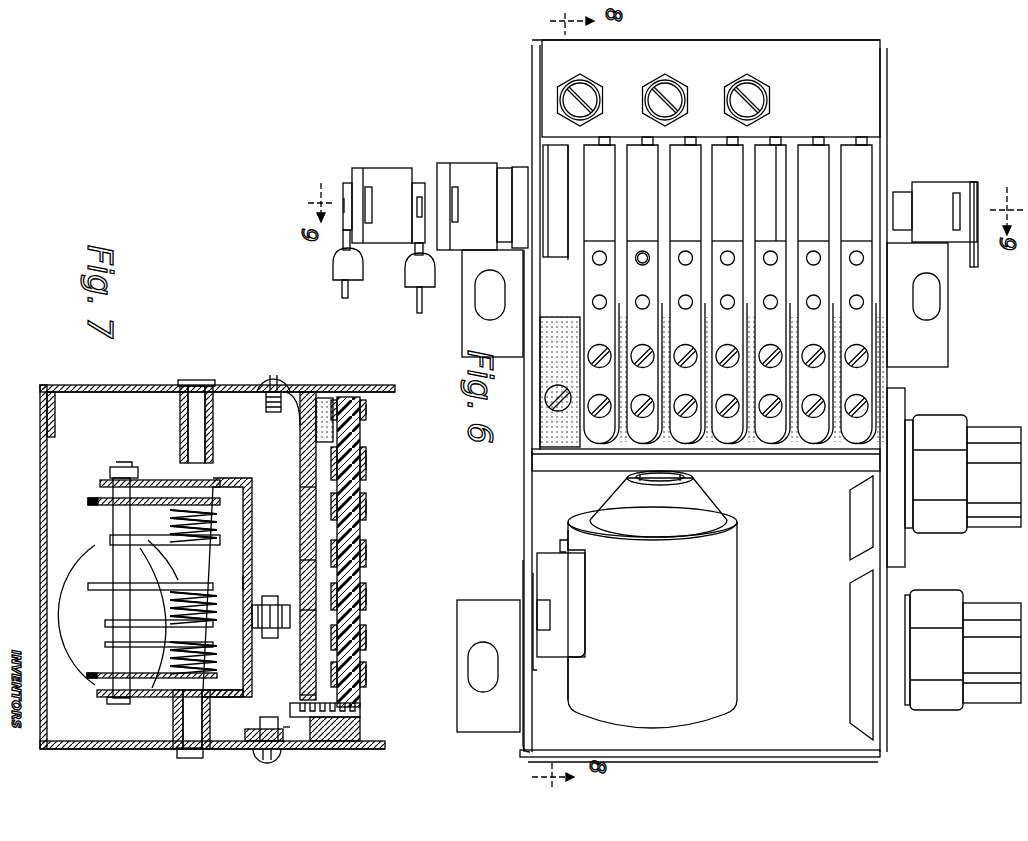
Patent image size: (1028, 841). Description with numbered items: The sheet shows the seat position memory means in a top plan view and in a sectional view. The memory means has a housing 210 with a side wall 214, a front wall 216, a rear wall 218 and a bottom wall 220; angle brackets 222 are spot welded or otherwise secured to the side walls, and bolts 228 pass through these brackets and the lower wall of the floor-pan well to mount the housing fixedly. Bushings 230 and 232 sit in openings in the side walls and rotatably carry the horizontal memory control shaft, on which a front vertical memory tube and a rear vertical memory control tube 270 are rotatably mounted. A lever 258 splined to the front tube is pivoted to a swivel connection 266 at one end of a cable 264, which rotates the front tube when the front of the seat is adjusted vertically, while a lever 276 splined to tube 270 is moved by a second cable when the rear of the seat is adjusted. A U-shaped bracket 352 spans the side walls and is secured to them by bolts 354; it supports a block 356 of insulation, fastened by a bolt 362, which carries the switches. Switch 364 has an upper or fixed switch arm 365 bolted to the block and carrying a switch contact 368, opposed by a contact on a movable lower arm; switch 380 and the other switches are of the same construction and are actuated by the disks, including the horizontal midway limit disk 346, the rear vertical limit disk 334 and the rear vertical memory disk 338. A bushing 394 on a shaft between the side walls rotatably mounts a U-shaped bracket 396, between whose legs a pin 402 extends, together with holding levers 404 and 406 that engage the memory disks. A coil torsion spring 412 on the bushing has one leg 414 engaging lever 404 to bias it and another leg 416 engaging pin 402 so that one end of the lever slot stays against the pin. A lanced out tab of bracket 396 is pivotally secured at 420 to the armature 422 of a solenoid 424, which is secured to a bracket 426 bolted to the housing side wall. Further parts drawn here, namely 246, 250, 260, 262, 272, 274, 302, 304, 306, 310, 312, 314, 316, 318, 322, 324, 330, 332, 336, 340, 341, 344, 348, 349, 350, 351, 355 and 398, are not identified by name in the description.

In FIG. 6, the housing 210 is at (760, 748).
In FIG. 7, the housing 210 is at (66, 400).
In FIG. 6, the side wall 214 is at (885, 125).
In FIG. 6, the front wall 216 is at (822, 758).
In FIG. 6, the rear wall 218 is at (535, 540).
In FIG. 7, the bottom wall 220 is at (44, 455).
In FIG. 6, the angle brackets 222 is at (472, 325).
In FIG. 6, the bolts 228 is at (905, 200).
In FIG. 6, the bushing 230 is at (890, 300).
In FIG. 6, the bushing 232 is at (517, 170).
In FIG. 6, the side flange 246 is at (965, 265).
In FIG. 6, the plug flange 250 is at (415, 185).
In FIG. 6, the lever 258 is at (365, 170).
In FIG. 6, the plug pin 260 is at (420, 180).
In FIG. 6, the plug cap 262 is at (424, 295).
In FIG. 6, the cable 264 is at (350, 282).
In FIG. 6, the swivel connection 266 is at (345, 185).
In FIG. 6, the rear vertical memory control tube 270 is at (450, 165).
In FIG. 6, the connector spacer 272 is at (502, 170).
In FIG. 6, the right connector body 274 is at (960, 190).
In FIG. 6, the lever 276 is at (978, 205).
In FIG. 7, the bottom block 302 is at (362, 730).
In FIG. 7, the contact column 304 is at (372, 490).
In FIG. 7, the column block 306 is at (368, 680).
In FIG. 7, the insulator 310 is at (305, 580).
In FIG. 7, the base plate 312 is at (380, 750).
In FIG. 7, the insulating pad 314 is at (340, 395).
In FIG. 7, the column block 316 is at (368, 565).
In FIG. 7, the column block 318 is at (368, 595).
In FIG. 7, the column block 322 is at (368, 450).
In FIG. 7, the column block 324 is at (368, 640).
In FIG. 7, the column block 330 is at (368, 420).
In FIG. 6, the bus plate 332 is at (540, 460).
In FIG. 6, the rear vertical limit disk 334 is at (636, 253).
In FIG. 7, the rear vertical limit disk 334 is at (252, 580).
In FIG. 6, the bus plate edge 336 is at (560, 455).
In FIG. 7, the bus plate edge 336 is at (300, 695).
In FIG. 6, the rear vertical memory disk 338 is at (572, 290).
In FIG. 7, the bracket 340 is at (283, 725).
In FIG. 6, the cover screw 341 is at (577, 88).
In FIG. 6, the frame 344 is at (556, 278).
In FIG. 6, the horizontal midway limit disk 346 is at (685, 160).
In FIG. 7, the horizontal midway limit disk 346 is at (250, 650).
In FIG. 6, the terminal strip 348 is at (640, 160).
In FIG. 6, the cover screw 349 is at (752, 80).
In FIG. 6, the terminal strip 350 is at (600, 160).
In FIG. 7, the terminal strip 350 is at (246, 698).
In FIG. 6, the cover screw 351 is at (690, 92).
In FIG. 7, the U-shaped bracket 352 is at (310, 395).
In FIG. 7, the bolts 354 is at (268, 380).
In FIG. 7, the column block 355 is at (368, 525).
In FIG. 6, the block of insulation 356 is at (725, 160).
In FIG. 7, the block of insulation 356 is at (352, 787).
In FIG. 6, the bolt 362 is at (562, 385).
In FIG. 7, the bolt 362 is at (197, 383).
In FIG. 6, the switch 364 is at (786, 162).
In FIG. 6, the upper or fixed switch arm 365 is at (770, 165).
In FIG. 6, the switch contact 368 is at (820, 165).
In FIG. 6, the switch 380 is at (848, 160).
In FIG. 7, the bushing 394 is at (100, 640).
In FIG. 7, the U-shaped bracket 396 is at (300, 500).
In FIG. 7, the bracket 398 is at (300, 470).
In FIG. 7, the pin 402 is at (122, 470).
In FIG. 7, the holding lever 404 is at (95, 498).
In FIG. 6, the holding lever 406 is at (530, 612).
In FIG. 7, the coil torsion spring 412 is at (245, 590).
In FIG. 7, the leg of spring 414 is at (178, 492).
In FIG. 7, the leg of spring 416 is at (108, 560).
In FIG. 7, the pivotal connection 420 is at (316, 600).
In FIG. 6, the armature 422 is at (700, 472).
In FIG. 6, the solenoid 424 is at (735, 565).
In FIG. 6, the bracket 426 is at (560, 650).